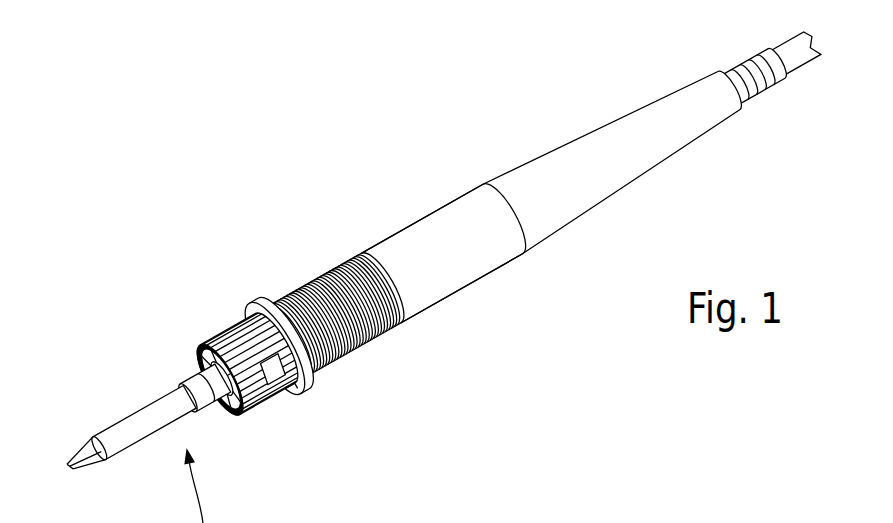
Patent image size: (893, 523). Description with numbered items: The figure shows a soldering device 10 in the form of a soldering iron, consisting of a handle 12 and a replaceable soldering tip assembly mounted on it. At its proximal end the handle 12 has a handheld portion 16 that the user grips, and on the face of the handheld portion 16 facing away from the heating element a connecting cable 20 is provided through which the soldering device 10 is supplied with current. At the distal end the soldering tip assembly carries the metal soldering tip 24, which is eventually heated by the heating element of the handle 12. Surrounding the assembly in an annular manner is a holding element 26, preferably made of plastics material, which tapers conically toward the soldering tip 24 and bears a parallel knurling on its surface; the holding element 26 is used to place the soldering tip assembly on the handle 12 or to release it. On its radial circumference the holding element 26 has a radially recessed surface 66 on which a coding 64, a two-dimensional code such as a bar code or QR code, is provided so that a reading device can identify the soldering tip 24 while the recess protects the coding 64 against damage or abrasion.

The soldering device 10 is at (262, 192).
The handle 12 is at (497, 283).
The handheld portion 16 is at (408, 248).
The connecting cable 20 is at (812, 42).
The soldering tip 24 is at (97, 440).
The holding element 26 is at (230, 327).
The coding 64 is at (275, 380).
The radially recessed surface 66 is at (303, 383).